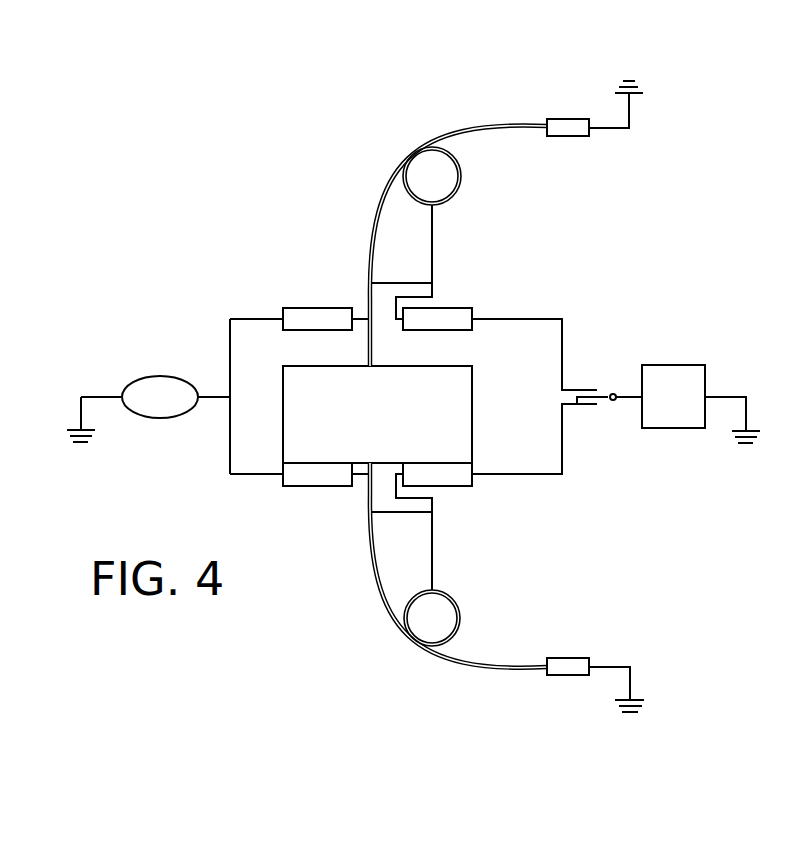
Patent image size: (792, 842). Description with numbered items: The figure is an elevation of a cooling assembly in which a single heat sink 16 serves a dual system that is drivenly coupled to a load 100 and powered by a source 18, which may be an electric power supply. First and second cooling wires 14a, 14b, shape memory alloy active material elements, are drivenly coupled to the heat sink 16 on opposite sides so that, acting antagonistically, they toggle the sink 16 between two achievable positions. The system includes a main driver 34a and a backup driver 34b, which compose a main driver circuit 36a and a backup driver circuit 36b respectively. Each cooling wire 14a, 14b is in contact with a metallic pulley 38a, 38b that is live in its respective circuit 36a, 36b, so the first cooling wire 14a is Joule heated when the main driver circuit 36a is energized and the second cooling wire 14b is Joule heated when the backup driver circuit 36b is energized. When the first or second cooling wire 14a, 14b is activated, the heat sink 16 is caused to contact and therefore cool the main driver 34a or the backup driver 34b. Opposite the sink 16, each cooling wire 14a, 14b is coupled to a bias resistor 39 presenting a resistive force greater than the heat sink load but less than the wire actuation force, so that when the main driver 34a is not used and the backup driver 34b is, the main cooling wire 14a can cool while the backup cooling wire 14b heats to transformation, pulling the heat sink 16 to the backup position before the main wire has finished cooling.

The load 100 is at (142, 408).
The heat sink 16 is at (366, 409).
The source 18 is at (659, 408).
The first cooling wire 14a is at (387, 198).
The second cooling wire 14b is at (380, 588).
The main driver 34a is at (328, 307).
The backup driver 34b is at (328, 487).
The main driver circuit 36a is at (432, 252).
The backup driver circuit 36b is at (432, 553).
The metallic pulley 38a is at (460, 188).
The metallic pulley 38b is at (460, 617).
The bias resistor 39 is at (568, 136).